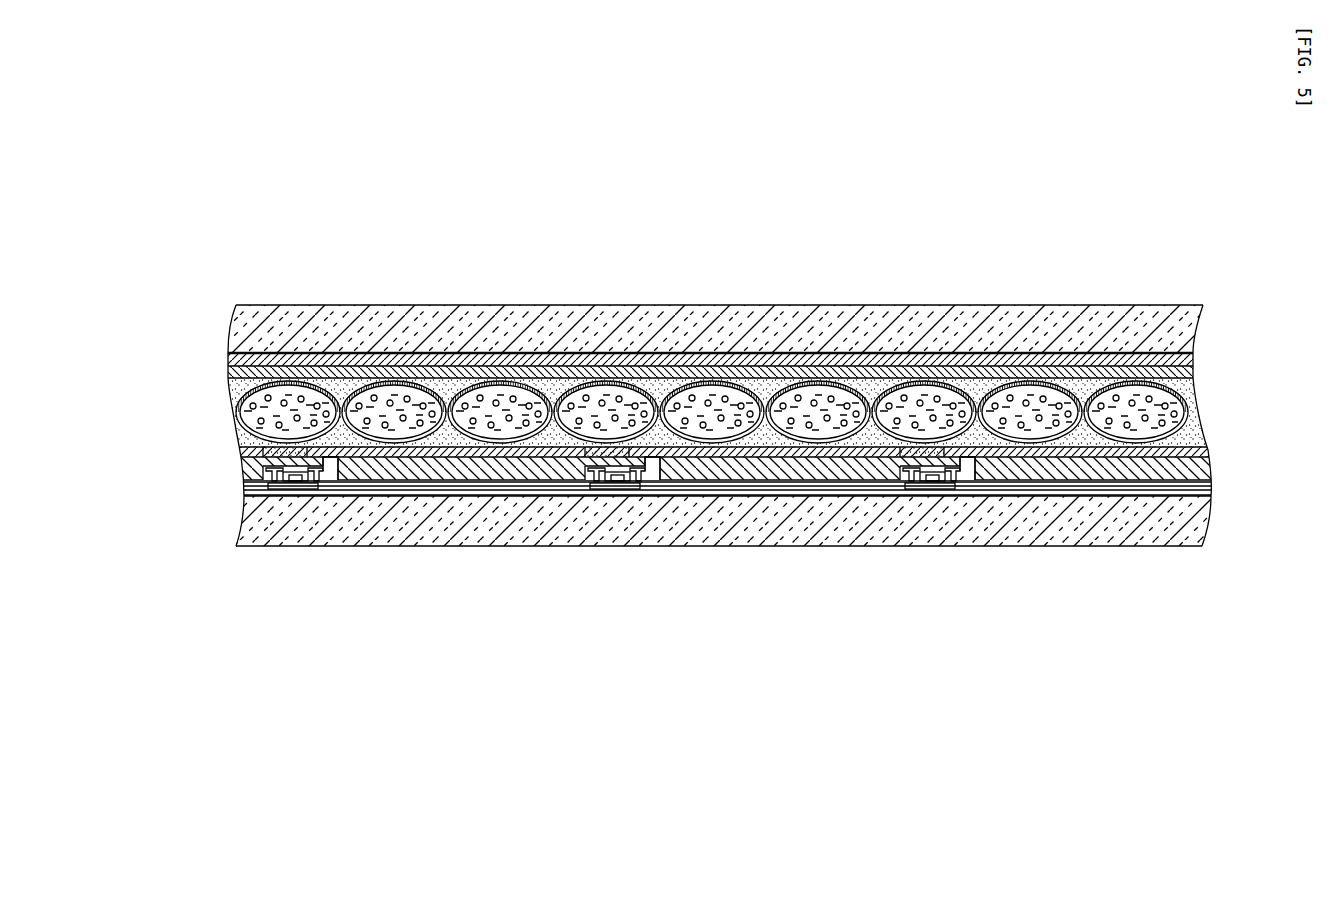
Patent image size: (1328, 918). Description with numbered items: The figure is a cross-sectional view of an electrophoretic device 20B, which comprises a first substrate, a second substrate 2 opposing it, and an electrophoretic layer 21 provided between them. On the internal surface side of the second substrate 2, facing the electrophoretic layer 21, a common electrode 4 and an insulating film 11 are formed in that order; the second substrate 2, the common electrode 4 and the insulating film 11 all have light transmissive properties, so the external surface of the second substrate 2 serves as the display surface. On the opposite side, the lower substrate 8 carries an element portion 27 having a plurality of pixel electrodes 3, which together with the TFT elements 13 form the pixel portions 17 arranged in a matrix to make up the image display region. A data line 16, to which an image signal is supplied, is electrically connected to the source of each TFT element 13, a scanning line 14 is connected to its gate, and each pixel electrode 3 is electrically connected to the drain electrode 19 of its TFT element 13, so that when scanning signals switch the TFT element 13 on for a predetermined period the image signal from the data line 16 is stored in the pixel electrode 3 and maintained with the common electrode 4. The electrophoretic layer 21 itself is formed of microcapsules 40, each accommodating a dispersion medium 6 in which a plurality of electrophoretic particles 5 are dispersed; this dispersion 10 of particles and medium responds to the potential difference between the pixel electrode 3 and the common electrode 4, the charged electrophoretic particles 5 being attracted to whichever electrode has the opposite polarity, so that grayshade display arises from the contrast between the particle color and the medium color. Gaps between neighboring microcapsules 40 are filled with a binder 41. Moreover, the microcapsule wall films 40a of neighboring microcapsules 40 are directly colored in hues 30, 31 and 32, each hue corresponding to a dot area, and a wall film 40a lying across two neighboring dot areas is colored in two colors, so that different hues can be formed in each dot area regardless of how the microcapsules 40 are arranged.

The second substrate 2 is at (238, 307).
The common electrode 4 is at (230, 356).
The insulating film 11 is at (229, 370).
The microcapsule wall film 40a is at (663, 354).
The microcapsule 40 is at (226, 422).
The element portion 27 is at (232, 464).
The rear substrate 8 is at (240, 509).
The hue 31 is at (342, 380).
The binder 41 is at (663, 321).
The hue 32 is at (664, 380).
The electrophoretic dispersion liquid 10 is at (711, 314).
The dispersion medium 6 is at (918, 382).
The electrophoretic particle 5 is at (952, 386).
The hue 30 is at (1085, 380).
The electrophoretic device 20B is at (1053, 253).
The electrophoretic layer 21 is at (1218, 381).
The TFT element 13 is at (310, 503).
The pixel electrode 3 is at (395, 466).
The pixel portion 17 is at (620, 545).
The data line 16 is at (560, 472).
The scanning line 14 is at (614, 478).
The drain electrode 19 is at (657, 473).